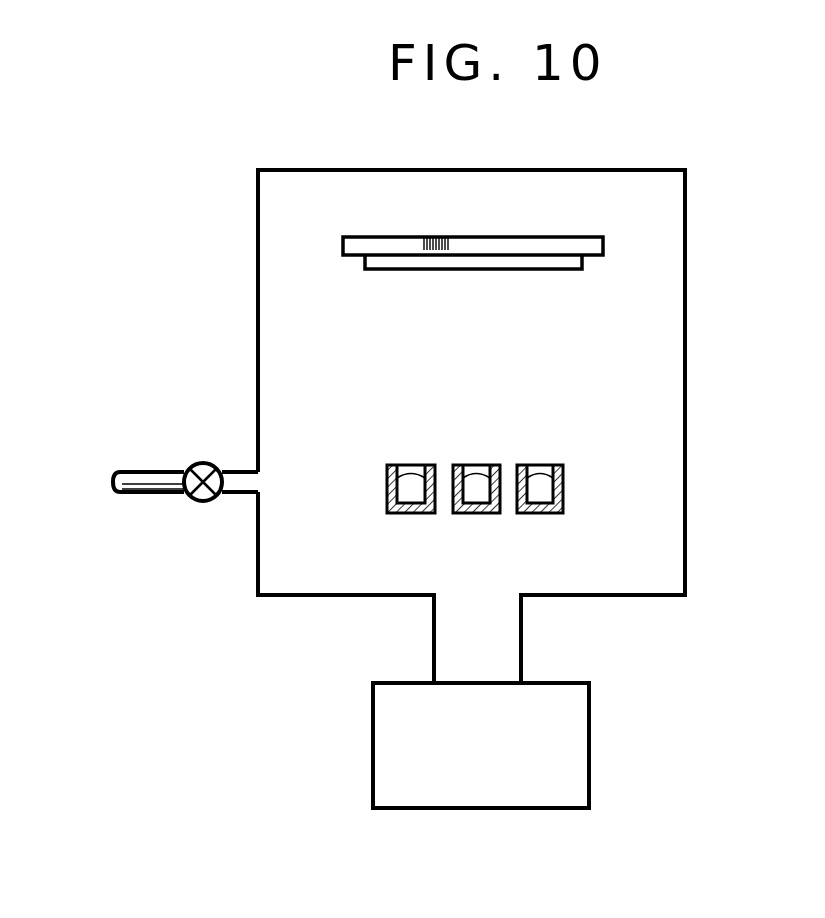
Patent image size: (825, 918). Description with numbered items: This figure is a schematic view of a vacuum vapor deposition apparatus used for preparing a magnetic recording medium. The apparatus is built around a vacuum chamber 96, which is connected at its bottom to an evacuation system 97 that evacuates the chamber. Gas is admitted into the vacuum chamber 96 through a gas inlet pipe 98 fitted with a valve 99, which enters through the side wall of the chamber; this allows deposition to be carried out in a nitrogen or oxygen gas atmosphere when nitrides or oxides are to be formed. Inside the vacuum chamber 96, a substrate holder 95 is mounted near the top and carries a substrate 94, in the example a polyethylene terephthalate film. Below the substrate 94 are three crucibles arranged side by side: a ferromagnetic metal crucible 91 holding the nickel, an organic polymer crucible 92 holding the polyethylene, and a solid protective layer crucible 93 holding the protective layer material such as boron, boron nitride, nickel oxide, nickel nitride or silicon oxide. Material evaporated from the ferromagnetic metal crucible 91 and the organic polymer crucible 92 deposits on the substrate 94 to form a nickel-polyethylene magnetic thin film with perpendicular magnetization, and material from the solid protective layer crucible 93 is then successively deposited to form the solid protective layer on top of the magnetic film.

The ferromagnetic metal crucible 91 is at (387, 489).
The organic polymer crucible 92 is at (468, 514).
The solid protective layer crucible 93 is at (563, 485).
The substrate 94 is at (562, 270).
The substrate holder 95 is at (603, 245).
The vacuum chamber 96 is at (620, 597).
The evacuation system 97 is at (590, 743).
The gas inlet pipe 98 is at (160, 471).
The valve 99 is at (196, 502).